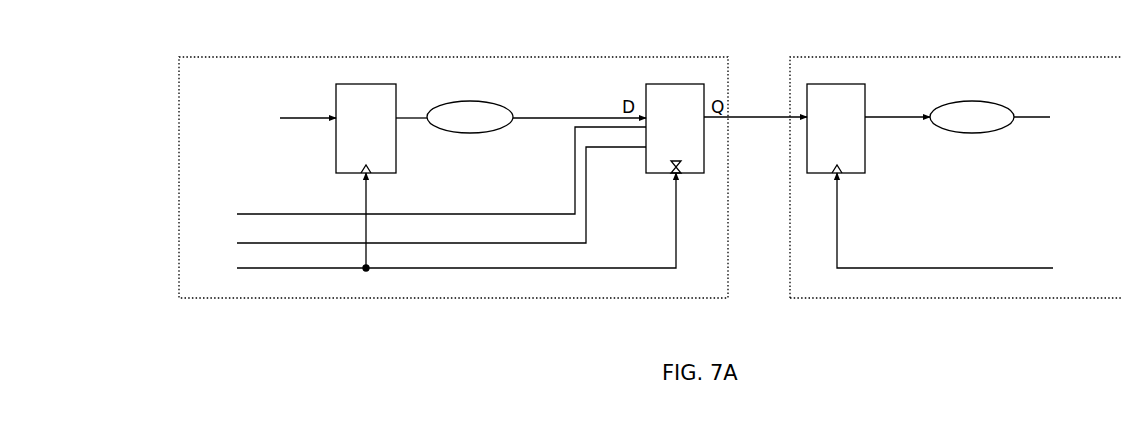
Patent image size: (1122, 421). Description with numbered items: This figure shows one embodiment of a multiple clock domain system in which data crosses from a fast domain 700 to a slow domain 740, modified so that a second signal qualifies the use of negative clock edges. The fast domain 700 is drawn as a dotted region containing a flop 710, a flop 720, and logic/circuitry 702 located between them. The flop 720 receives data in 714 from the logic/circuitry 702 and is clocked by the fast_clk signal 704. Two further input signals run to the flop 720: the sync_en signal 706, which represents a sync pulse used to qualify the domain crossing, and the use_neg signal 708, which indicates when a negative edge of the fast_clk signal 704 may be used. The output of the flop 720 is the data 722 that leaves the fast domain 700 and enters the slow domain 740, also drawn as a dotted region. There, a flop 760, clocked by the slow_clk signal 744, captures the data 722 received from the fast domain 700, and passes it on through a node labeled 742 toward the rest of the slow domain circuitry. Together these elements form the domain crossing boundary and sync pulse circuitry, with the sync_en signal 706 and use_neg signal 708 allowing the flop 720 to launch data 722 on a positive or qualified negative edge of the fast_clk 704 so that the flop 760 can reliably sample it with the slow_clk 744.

The fast domain 700 is at (465, 58).
The logic/circuitry 702 is at (454, 117).
The fast_clk 704 is at (414, 268).
The sync_en 706 is at (439, 243).
The use_neg 708 is at (465, 214).
The flop 710 is at (366, 128).
The data in 714 is at (535, 115).
The flop 720 is at (675, 128).
The data 722 is at (745, 115).
The slow domain 740 is at (995, 56).
The output signal node 742 is at (957, 117).
The slow_clk 744 is at (1032, 267).
The flop 760 is at (836, 128).